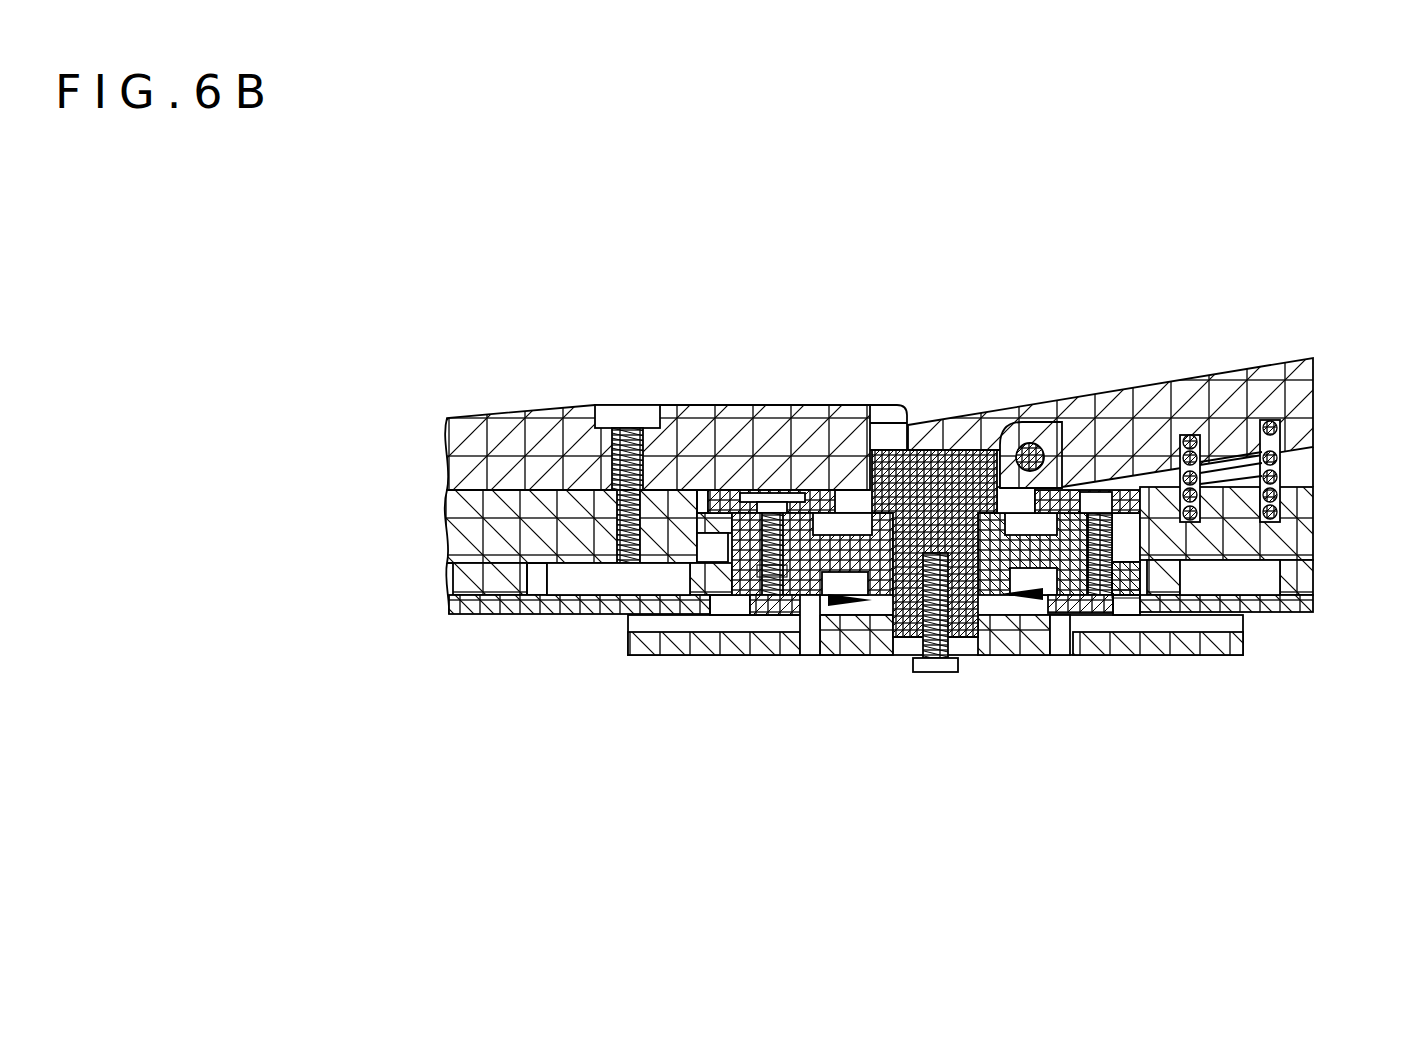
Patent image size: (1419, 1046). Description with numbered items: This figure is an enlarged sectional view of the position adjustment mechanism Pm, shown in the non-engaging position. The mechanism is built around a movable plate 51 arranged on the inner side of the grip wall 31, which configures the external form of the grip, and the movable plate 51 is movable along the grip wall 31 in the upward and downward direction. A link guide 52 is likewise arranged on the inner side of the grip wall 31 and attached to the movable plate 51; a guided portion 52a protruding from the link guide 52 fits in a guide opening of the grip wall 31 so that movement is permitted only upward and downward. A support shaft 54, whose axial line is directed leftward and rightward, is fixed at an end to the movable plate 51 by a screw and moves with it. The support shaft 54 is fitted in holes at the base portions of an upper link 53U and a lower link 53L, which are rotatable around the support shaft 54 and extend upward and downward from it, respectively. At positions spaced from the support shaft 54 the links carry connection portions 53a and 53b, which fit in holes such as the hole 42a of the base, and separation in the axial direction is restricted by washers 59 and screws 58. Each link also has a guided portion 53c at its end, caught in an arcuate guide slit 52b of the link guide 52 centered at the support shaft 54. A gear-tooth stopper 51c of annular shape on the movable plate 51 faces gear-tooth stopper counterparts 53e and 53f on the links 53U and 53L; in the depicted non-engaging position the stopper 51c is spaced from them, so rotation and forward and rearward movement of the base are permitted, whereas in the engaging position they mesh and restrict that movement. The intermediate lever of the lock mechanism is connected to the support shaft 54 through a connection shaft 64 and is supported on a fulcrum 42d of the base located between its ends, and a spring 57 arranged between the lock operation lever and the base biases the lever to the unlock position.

The grip wall 31 is at (1318, 592).
The hole 42a is at (1183, 570).
The fulcrum 42d is at (1030, 443).
The movable plate 51 is at (1203, 643).
The stopper 51c is at (840, 640).
The link guide 52 is at (1282, 613).
The guided portion 52a is at (700, 572).
The guide slit 52b is at (738, 606).
The connection portion 53a is at (745, 492).
The connection portion 53b is at (1107, 575).
The guided portion 53c is at (763, 572).
The stopper counterpart 53e is at (847, 578).
The stopper counterpart 53f is at (1035, 588).
The lower link 53L is at (1003, 600).
The upper link 53U is at (820, 573).
The support shaft 54 is at (950, 660).
The spring 57 is at (1290, 477).
The screw 58 is at (780, 512).
The washer 59 is at (827, 490).
The connection shaft 64 is at (933, 450).
The position adjustment mechanism Pm is at (897, 670).